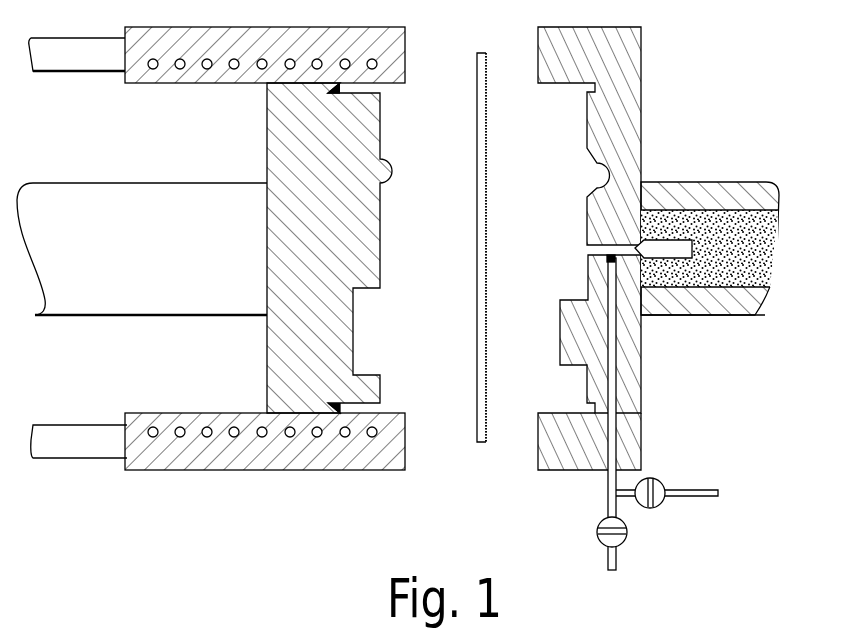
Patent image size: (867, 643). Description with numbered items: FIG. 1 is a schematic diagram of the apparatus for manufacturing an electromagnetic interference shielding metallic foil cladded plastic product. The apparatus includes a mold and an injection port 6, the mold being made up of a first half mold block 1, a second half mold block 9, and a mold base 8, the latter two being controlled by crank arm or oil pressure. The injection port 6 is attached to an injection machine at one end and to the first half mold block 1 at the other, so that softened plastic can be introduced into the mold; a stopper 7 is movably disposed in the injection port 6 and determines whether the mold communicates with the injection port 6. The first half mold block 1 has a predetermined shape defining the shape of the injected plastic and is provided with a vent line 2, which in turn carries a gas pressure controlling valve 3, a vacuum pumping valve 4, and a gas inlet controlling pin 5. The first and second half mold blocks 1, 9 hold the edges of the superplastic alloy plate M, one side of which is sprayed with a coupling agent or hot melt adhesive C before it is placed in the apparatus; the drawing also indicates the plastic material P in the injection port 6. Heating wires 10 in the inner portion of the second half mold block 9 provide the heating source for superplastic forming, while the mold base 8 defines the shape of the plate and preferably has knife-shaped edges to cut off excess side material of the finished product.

The first half mold block 1 is at (637, 453).
The vent line 2 is at (612, 385).
The gas pressure controlling valve 3 is at (620, 540).
The vacuum pumping valve 4 is at (664, 500).
The gas inlet controlling pin 5 is at (606, 262).
The injection port 6 is at (710, 254).
The stopper 7 is at (670, 250).
The mold base 8 is at (353, 333).
The second half mold block 9 is at (260, 466).
The heating wires 10 is at (233, 426).
The powder P is at (701, 221).
The superplastic alloy plate M is at (478, 420).
The coating C is at (487, 398).